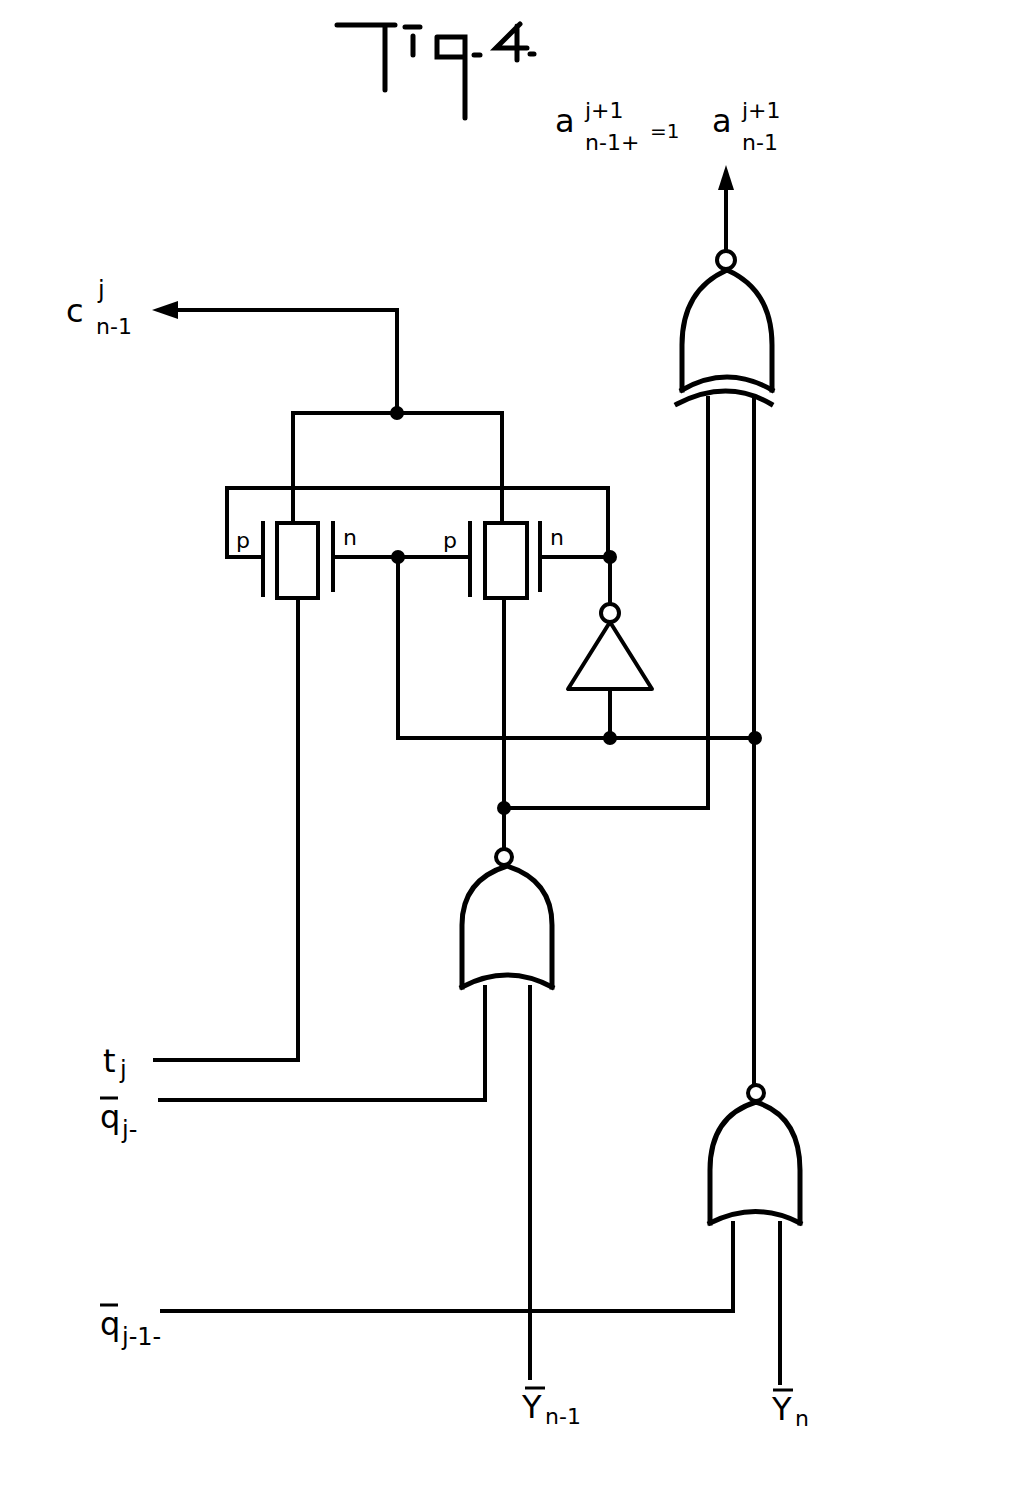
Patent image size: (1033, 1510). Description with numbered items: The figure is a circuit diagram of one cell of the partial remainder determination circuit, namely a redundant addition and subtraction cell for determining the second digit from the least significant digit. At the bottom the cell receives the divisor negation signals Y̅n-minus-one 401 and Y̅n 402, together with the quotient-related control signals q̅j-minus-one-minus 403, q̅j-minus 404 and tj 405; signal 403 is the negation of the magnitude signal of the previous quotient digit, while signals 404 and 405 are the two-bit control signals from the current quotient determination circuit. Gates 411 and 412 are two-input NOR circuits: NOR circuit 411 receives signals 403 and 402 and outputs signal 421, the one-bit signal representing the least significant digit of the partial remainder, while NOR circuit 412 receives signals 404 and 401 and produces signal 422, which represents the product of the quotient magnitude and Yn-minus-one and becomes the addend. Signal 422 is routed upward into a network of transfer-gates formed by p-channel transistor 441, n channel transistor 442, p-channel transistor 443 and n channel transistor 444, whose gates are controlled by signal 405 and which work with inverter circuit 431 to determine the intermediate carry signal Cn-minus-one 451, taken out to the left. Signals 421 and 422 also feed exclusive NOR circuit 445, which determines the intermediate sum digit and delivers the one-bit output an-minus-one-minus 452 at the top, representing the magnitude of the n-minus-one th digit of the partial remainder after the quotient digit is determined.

The signal Y̅n-1 401 is at (530, 1349).
The signal Y̅n 402 is at (780, 1350).
The signal q̅j-1- 403 is at (244, 1308).
The signal q̅j- 404 is at (222, 1105).
The signal tj 405 is at (233, 1057).
The NOR circuit 411 is at (799, 1148).
The NOR circuit 412 is at (550, 934).
The signal an-^j 421 is at (760, 950).
The signal dn-1^j 422 is at (500, 841).
The inverter circuit 431 is at (633, 663).
The p-channel transistor 441 is at (256, 598).
The n channel transistor 442 is at (333, 590).
The p-channel transistor 443 is at (470, 597).
The n channel transistor 444 is at (540, 590).
The exclusive NOR circuit 445 is at (773, 337).
The signal Cn-1^j 451 is at (277, 333).
The output an-1-^{j+1} 452 is at (726, 230).